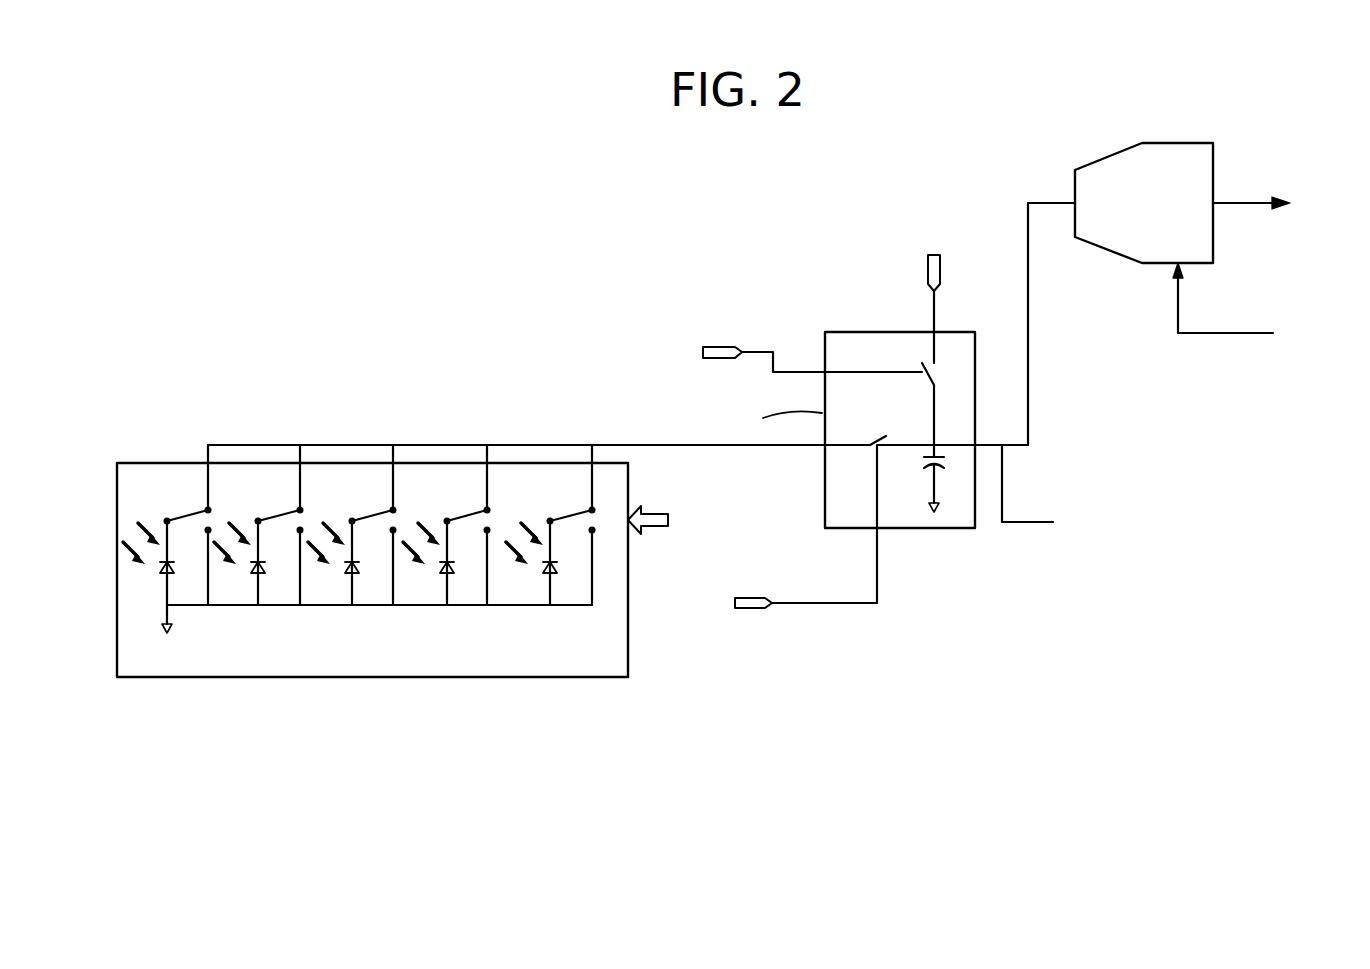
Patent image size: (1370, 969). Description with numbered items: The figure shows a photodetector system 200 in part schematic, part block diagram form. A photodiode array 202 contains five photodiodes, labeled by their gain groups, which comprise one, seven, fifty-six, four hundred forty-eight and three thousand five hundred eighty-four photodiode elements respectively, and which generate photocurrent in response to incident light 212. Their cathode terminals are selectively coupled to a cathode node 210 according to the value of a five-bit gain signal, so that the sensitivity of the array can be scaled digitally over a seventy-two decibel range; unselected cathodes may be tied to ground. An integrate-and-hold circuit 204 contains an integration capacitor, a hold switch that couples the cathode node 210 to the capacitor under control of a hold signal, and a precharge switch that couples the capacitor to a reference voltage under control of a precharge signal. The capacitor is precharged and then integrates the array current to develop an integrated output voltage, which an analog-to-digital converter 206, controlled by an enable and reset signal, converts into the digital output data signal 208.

The photodetector system 200 is at (492, 278).
The photodiode array 202 is at (162, 460).
The integrate-and-hold circuit 204 is at (893, 332).
The analog-to-digital converter 206 is at (1165, 143).
The output data signal 208 is at (1265, 200).
The cathode node 210 is at (605, 445).
The incident light 212 is at (130, 563).